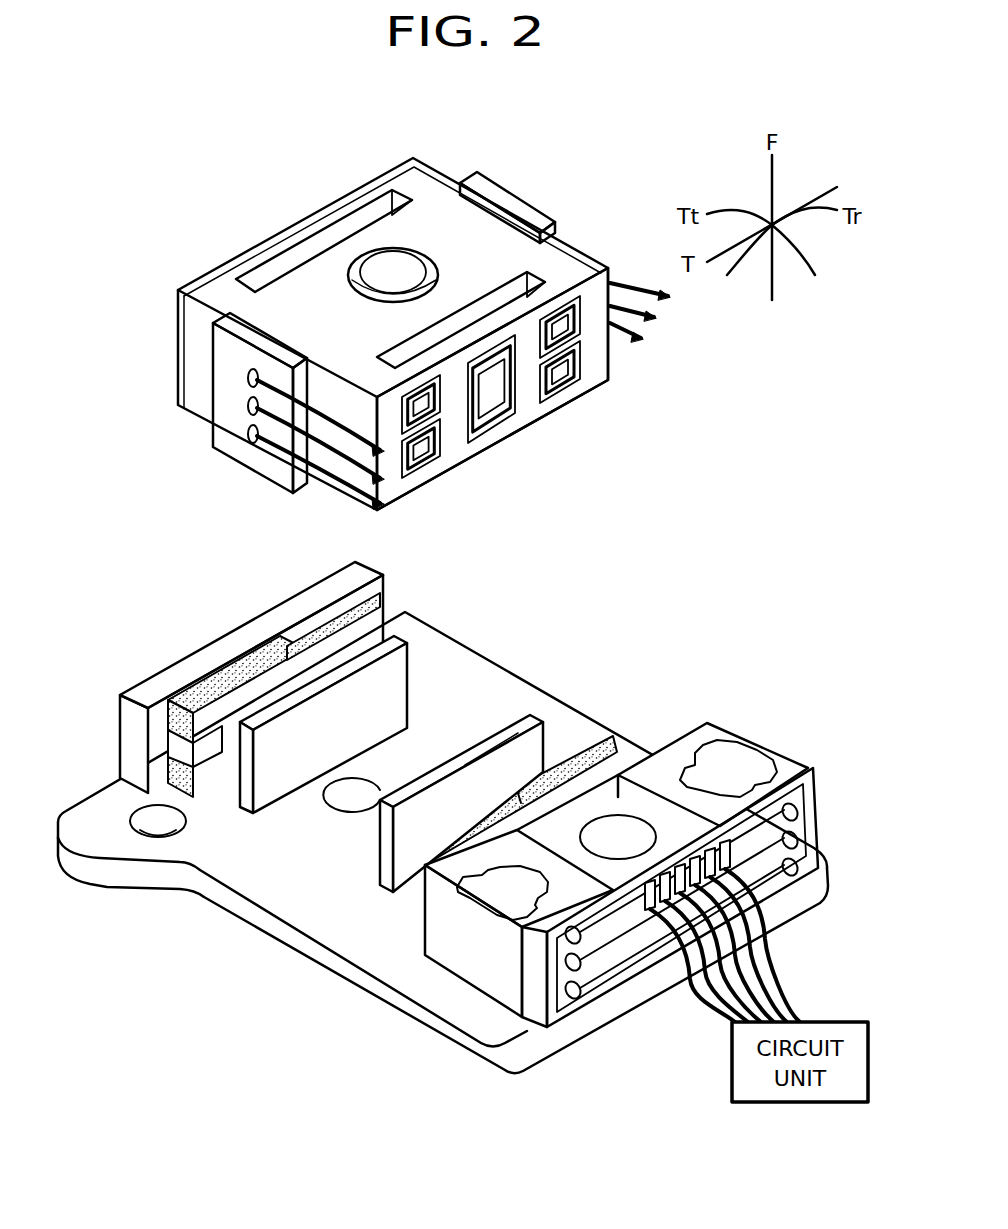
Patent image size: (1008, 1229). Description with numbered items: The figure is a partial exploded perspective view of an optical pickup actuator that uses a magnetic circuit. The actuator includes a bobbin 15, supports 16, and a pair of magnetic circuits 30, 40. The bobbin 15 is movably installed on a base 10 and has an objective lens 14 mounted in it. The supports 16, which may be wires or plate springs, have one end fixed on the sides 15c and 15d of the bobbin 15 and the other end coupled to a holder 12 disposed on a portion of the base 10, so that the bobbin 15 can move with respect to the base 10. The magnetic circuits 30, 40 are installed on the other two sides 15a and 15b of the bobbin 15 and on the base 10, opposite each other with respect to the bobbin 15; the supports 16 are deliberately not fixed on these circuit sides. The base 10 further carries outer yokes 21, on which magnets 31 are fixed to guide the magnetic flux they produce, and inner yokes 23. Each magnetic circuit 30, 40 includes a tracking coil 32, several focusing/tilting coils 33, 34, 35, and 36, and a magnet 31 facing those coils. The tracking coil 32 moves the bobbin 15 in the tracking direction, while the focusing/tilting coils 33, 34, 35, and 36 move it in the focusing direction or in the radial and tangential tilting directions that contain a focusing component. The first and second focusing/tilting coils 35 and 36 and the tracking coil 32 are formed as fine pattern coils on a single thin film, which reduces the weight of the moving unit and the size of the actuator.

The base 10 is at (302, 945).
The holder 12 is at (472, 963).
The objective lens 14 is at (383, 270).
The bobbin 15 is at (403, 178).
The side of the bobbin 15a is at (517, 313).
The side of the bobbin 15b is at (212, 277).
The side of the bobbin 15c is at (195, 369).
The side of the bobbin 15d is at (438, 170).
The supports 16 is at (258, 408).
The outer yokes 21 is at (158, 683).
The inner yokes 23 is at (393, 683).
The magnetic circuit 30 is at (598, 383).
The magnet 31 is at (237, 673).
The tracking coil 32 is at (503, 423).
The focusing/tilting coil 33 is at (582, 335).
The focusing/tilting coil 34 is at (565, 398).
The first focusing/tilting coil 35 is at (441, 414).
The second focusing/tilting coil 36 is at (422, 474).
The magnetic circuit 40 is at (261, 230).